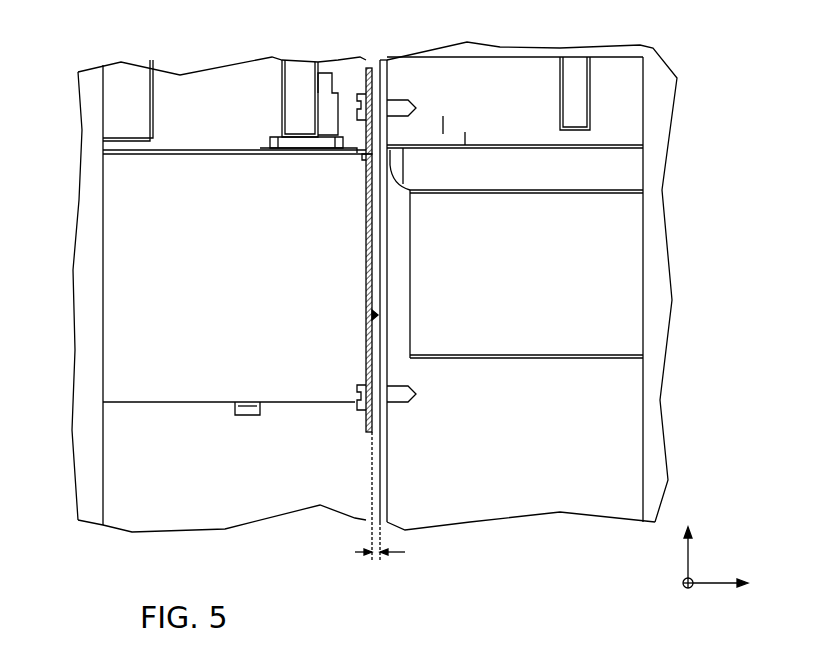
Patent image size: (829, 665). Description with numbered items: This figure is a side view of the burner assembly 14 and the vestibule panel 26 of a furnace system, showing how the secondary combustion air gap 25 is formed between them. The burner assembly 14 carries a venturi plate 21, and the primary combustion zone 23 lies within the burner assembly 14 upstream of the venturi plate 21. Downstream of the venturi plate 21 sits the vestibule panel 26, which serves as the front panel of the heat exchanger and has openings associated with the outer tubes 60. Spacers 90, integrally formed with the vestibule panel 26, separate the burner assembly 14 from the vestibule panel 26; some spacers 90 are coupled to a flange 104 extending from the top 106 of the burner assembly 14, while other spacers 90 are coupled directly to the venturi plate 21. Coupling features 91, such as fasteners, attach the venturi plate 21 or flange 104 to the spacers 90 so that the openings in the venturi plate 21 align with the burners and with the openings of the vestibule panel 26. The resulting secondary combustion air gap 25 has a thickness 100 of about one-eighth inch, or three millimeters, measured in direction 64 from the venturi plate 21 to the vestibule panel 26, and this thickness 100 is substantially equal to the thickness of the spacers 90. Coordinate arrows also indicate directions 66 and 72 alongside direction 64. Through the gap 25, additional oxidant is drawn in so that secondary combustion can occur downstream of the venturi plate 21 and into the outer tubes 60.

The burner assembly 14 is at (152, 355).
The primary combustion zone 23 is at (197, 359).
The venturi plate 21 is at (370, 282).
The secondary combustion air gap 25 is at (372, 315).
The vestibule panel 26 is at (383, 333).
The outer tubes 60 is at (548, 305).
The spacers 90 is at (378, 80).
The coupling features 91 is at (417, 112).
The thickness 100 is at (398, 553).
The flange 104 is at (367, 83).
The top 106 is at (193, 150).
The direction 64 is at (727, 597).
The y axis direction 66 is at (704, 551).
The z axis direction 72 is at (671, 599).